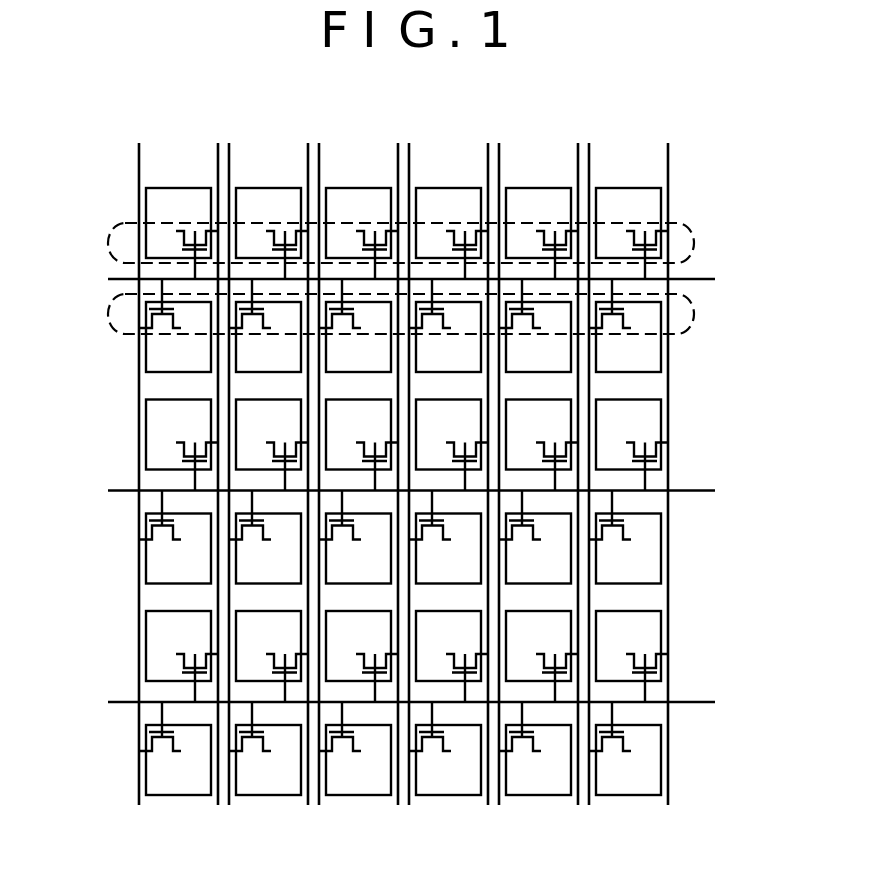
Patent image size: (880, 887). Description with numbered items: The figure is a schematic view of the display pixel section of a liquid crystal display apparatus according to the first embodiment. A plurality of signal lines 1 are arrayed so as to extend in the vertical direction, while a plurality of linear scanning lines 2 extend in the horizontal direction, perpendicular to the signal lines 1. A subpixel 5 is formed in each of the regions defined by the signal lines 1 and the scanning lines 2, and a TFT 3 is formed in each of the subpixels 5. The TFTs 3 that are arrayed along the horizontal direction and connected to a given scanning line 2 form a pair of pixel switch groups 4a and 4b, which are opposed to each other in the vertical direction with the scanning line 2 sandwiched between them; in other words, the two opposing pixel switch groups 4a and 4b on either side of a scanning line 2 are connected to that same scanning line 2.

The signal line 1 is at (138, 157).
The scanning line 2 is at (112, 279).
The TFT 3 is at (196, 237).
The pixel switch group 4a is at (698, 242).
The pixel switch group 4b is at (698, 313).
The subpixel 5 is at (157, 205).